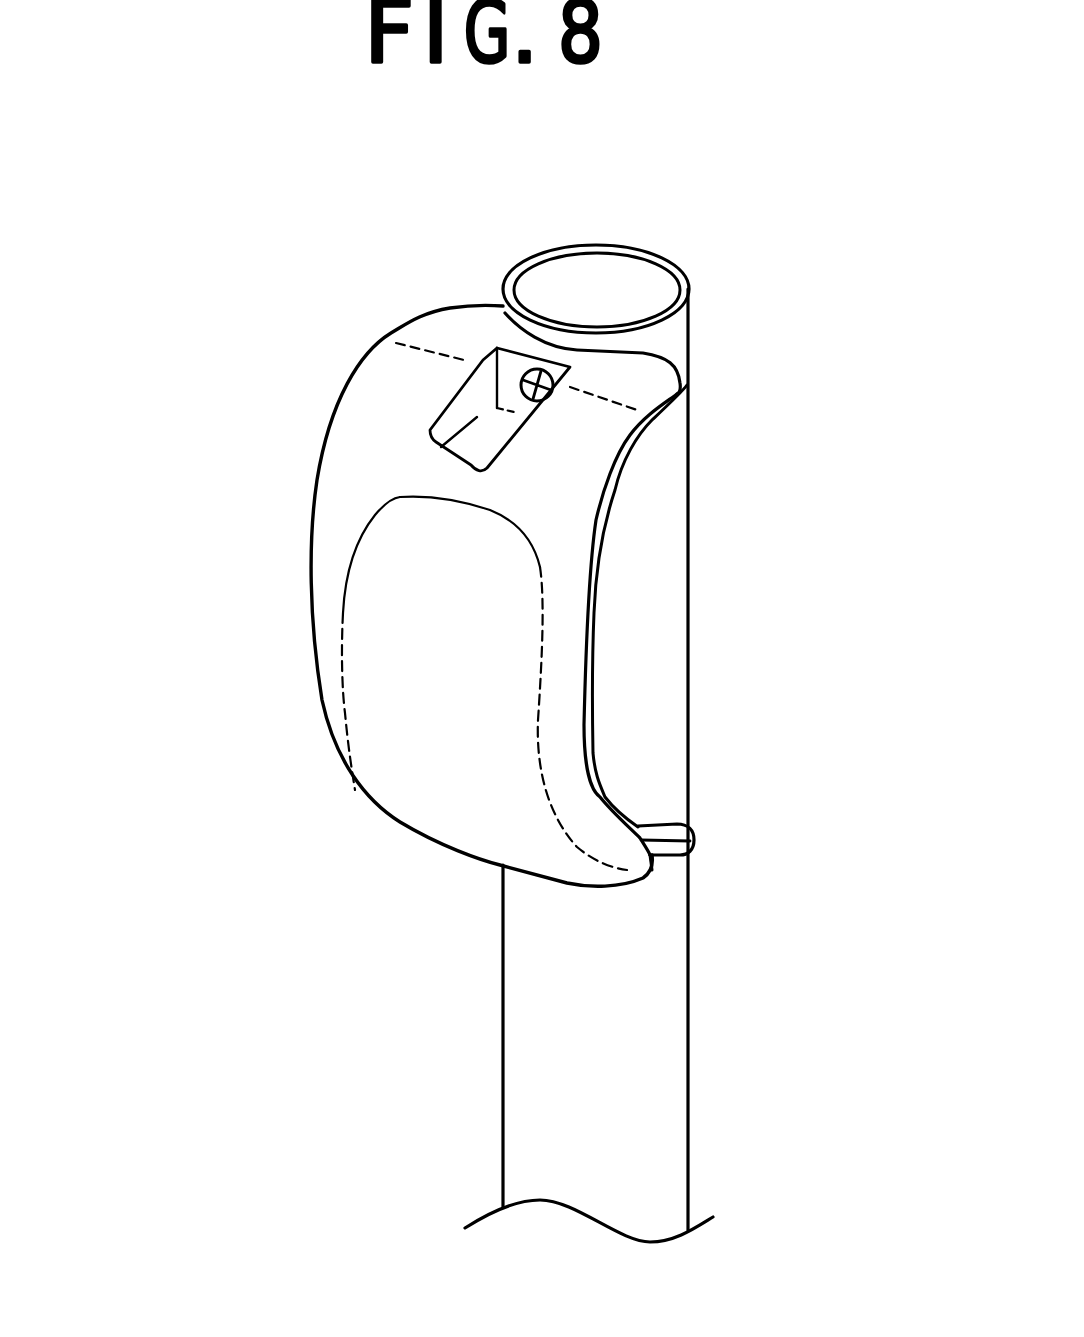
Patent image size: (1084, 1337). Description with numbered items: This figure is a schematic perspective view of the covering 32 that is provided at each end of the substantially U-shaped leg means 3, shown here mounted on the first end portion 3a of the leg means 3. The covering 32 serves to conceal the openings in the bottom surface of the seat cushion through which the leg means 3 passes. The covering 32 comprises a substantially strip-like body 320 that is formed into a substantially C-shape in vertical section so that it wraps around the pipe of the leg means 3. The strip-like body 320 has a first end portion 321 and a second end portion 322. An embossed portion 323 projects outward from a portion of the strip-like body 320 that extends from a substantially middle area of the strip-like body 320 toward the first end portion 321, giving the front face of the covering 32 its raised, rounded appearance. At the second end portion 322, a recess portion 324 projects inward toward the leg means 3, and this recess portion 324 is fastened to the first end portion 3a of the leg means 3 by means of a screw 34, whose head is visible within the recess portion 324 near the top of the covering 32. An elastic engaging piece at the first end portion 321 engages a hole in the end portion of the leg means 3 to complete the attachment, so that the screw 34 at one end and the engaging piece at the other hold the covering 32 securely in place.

The leg means 3 is at (585, 743).
The first end portion of the leg means 3a is at (653, 605).
The covering 32 is at (452, 544).
The strip-like body 320 is at (312, 580).
The first end portion of the strip-like body 321 is at (652, 868).
The second end portion of the strip-like body 322 is at (607, 370).
The embossed portion 323 is at (417, 752).
The recess portion 324 is at (477, 397).
The screw 34 is at (520, 379).